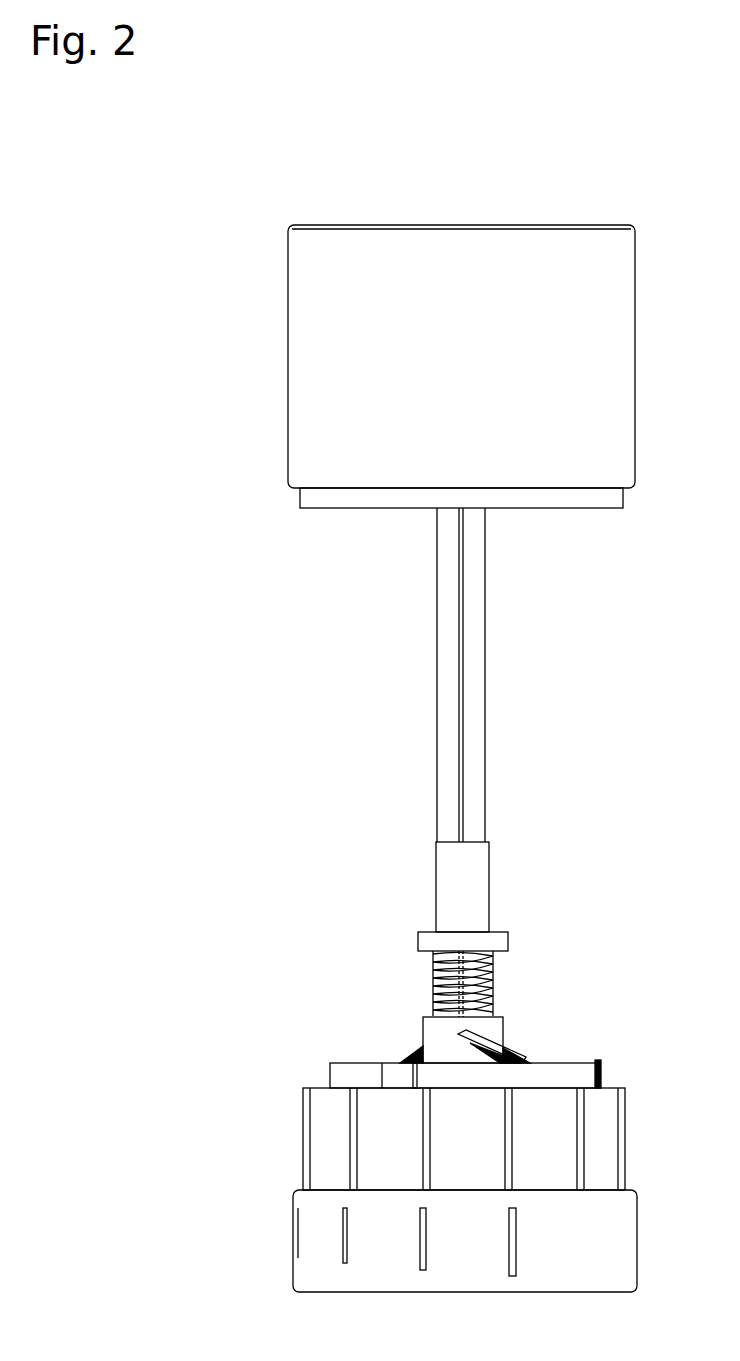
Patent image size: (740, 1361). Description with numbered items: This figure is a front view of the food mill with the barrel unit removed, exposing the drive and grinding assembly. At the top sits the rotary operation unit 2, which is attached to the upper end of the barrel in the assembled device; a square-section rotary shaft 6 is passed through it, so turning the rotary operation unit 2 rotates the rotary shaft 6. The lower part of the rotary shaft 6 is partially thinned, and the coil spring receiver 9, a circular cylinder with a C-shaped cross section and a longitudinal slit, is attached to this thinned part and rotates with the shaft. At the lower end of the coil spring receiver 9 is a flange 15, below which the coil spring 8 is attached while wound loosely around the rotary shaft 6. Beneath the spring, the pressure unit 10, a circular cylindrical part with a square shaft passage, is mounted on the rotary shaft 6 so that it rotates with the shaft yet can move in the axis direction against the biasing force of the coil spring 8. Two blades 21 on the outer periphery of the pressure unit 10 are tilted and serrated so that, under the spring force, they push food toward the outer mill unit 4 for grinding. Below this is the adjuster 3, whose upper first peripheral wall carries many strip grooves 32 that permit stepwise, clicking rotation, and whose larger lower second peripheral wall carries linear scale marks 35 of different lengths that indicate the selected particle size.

The rotary operation unit 2 is at (635, 368).
The adjuster 3 is at (625, 1170).
The outer mill unit 4 is at (602, 1069).
The rotary shaft 6 is at (486, 685).
The coil spring 8 is at (493, 973).
The coil spring receiver 9 is at (489, 873).
The pressure unit 10 is at (503, 1032).
The flange 15 is at (508, 940).
The blades 21 is at (518, 1058).
The strip grooves 32 is at (430, 1123).
The linear scale marks 35 is at (517, 1240).